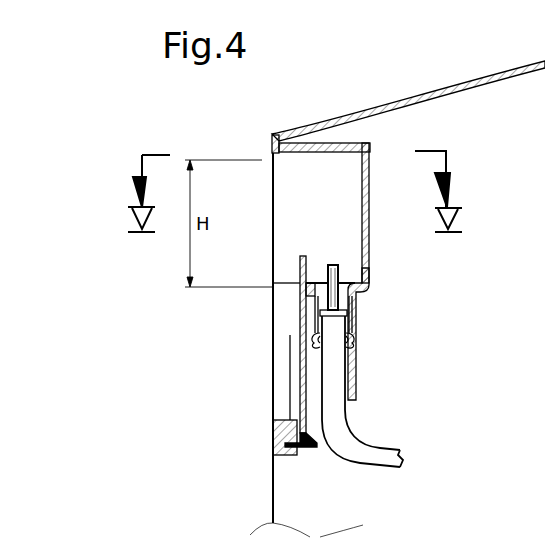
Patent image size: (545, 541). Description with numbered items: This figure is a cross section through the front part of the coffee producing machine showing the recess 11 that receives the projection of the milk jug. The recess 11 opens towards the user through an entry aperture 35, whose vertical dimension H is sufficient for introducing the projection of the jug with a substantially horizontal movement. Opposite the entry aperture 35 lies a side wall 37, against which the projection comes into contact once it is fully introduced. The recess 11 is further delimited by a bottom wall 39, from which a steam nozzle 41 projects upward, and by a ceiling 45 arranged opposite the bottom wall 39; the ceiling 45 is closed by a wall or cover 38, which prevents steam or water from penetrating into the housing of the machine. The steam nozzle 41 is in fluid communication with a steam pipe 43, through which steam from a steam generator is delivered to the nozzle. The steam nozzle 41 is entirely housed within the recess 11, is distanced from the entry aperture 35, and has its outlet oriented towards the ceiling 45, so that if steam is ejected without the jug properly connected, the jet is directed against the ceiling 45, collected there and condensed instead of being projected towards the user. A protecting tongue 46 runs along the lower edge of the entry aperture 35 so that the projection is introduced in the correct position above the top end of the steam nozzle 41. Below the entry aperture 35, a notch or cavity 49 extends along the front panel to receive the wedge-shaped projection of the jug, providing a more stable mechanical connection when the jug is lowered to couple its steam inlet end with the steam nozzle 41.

The recess 11 is at (306, 178).
The entry aperture 35 is at (274, 223).
The side wall 37 is at (362, 224).
The wall or cover 38 is at (314, 141).
The bottom wall 39 is at (367, 268).
The steam nozzle 41 is at (323, 265).
The steam pipe 43 is at (345, 402).
The ceiling 45 is at (328, 153).
The protecting tongue 46 is at (300, 264).
The notch or cavity 49 is at (290, 400).